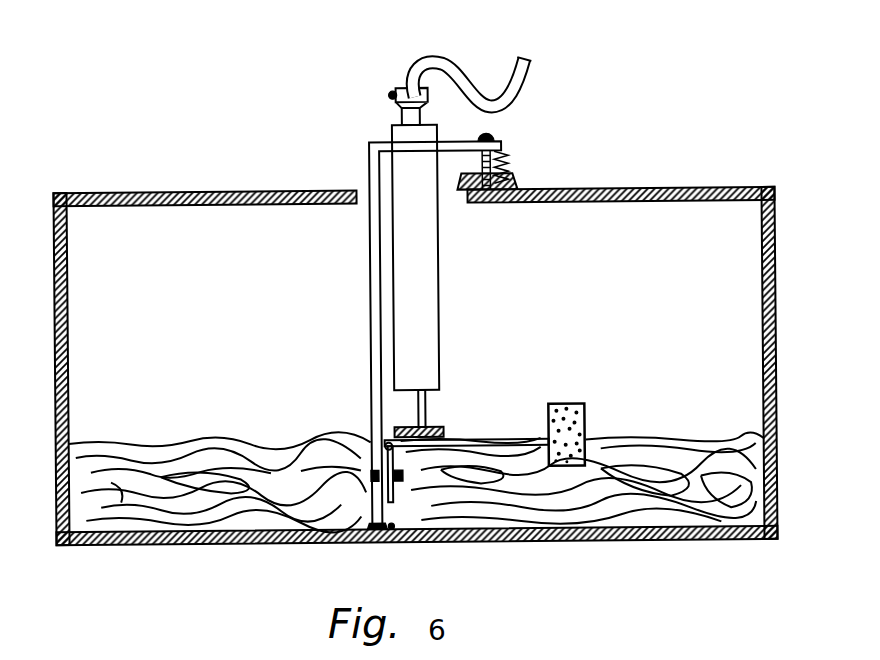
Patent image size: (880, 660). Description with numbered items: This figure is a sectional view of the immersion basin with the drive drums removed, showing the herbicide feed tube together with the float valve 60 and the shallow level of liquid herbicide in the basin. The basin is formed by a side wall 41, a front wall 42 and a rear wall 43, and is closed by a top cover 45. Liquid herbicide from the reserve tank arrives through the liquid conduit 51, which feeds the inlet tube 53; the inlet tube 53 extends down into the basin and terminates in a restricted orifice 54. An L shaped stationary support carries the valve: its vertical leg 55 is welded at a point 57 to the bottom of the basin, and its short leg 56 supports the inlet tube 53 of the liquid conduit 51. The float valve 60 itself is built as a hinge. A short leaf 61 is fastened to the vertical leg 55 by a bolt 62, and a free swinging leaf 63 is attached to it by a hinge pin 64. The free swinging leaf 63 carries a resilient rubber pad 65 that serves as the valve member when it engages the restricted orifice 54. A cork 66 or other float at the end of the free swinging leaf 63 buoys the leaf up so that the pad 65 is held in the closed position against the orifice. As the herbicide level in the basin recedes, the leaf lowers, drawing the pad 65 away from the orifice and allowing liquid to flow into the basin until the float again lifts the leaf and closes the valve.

The side wall 41 is at (416, 434).
The front wall 42 is at (765, 325).
The rear wall 43 is at (72, 357).
The top cover 45 is at (205, 191).
The liquid conduit 51 is at (530, 94).
The inlet tube 53 is at (441, 290).
The restricted orifice 54 is at (424, 402).
The vertical leg 55 is at (369, 293).
The short leg 56 is at (506, 147).
The weld point 57 is at (383, 527).
The float valve 60 is at (500, 405).
The short leaf 61 is at (390, 500).
The bolt 62 is at (394, 488).
The free swinging leaf 63 is at (477, 435).
The hinge pin 64 is at (385, 443).
The resilient rubber pad 65 is at (443, 427).
The cork 66 is at (585, 410).